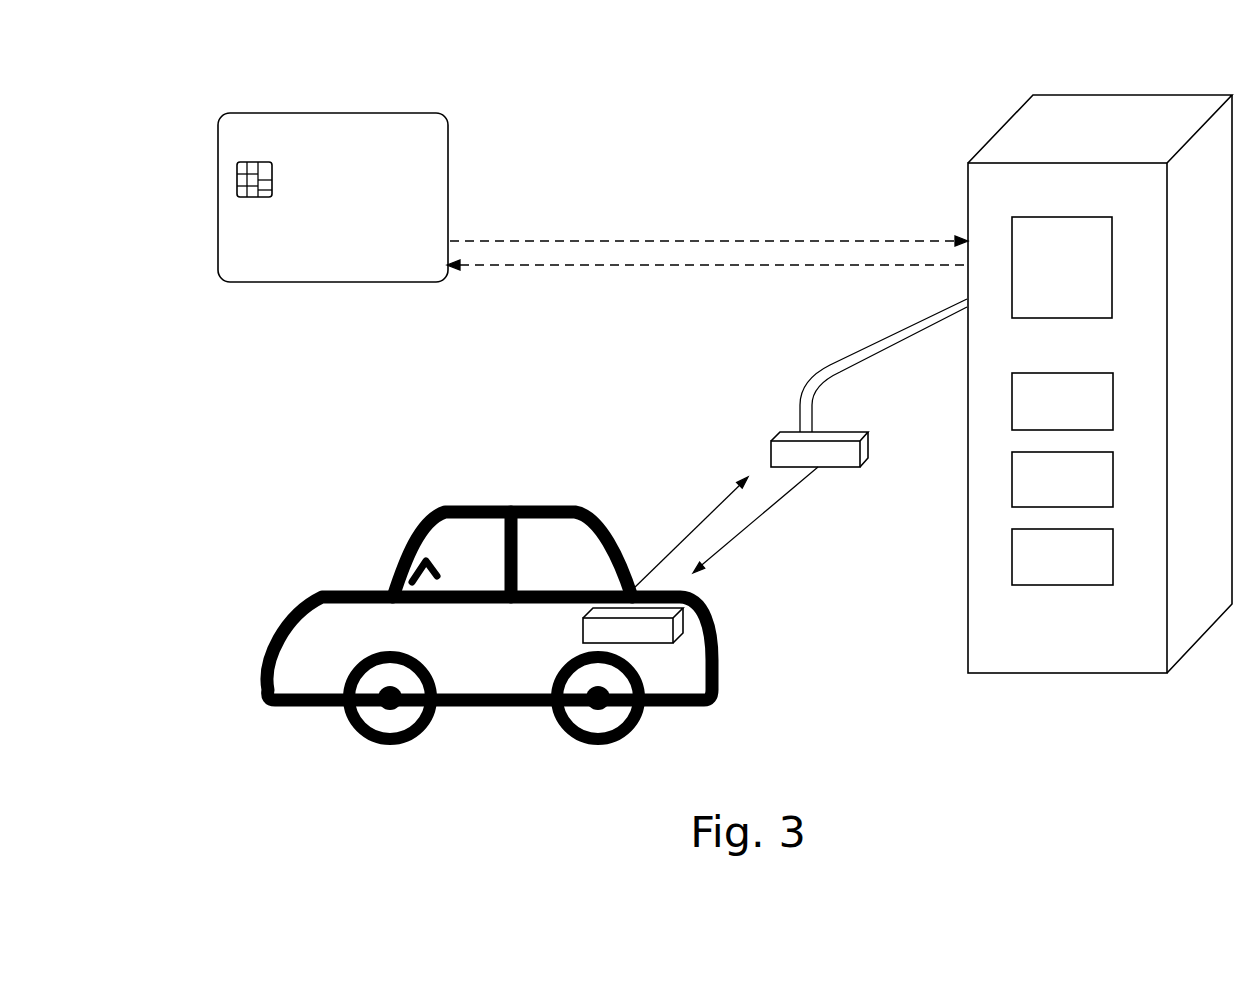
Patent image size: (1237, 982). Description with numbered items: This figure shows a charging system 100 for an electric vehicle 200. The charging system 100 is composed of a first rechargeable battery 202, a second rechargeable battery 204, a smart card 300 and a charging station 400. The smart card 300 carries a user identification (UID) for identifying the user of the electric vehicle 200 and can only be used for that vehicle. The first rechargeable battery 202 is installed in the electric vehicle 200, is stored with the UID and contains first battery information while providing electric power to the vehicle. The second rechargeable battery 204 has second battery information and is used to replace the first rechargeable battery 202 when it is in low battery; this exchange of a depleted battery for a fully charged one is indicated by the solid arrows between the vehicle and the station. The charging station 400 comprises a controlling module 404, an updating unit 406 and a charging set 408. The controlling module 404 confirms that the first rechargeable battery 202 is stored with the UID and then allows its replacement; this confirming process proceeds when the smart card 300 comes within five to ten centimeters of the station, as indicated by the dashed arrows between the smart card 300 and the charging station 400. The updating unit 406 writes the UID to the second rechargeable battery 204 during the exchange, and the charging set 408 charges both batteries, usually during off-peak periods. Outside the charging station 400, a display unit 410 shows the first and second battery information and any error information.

The charging system 100 is at (727, 53).
The electric vehicle 200 is at (444, 634).
The first rechargeable battery 202 is at (583, 628).
The second rechargeable battery 204 is at (771, 434).
The smart card 300 is at (403, 167).
The charging station 400 is at (1050, 379).
The controlling module 404 is at (1062, 401).
The updating unit 406 is at (1062, 479).
The charging set 408 is at (1062, 557).
The display unit 410 is at (1062, 267).